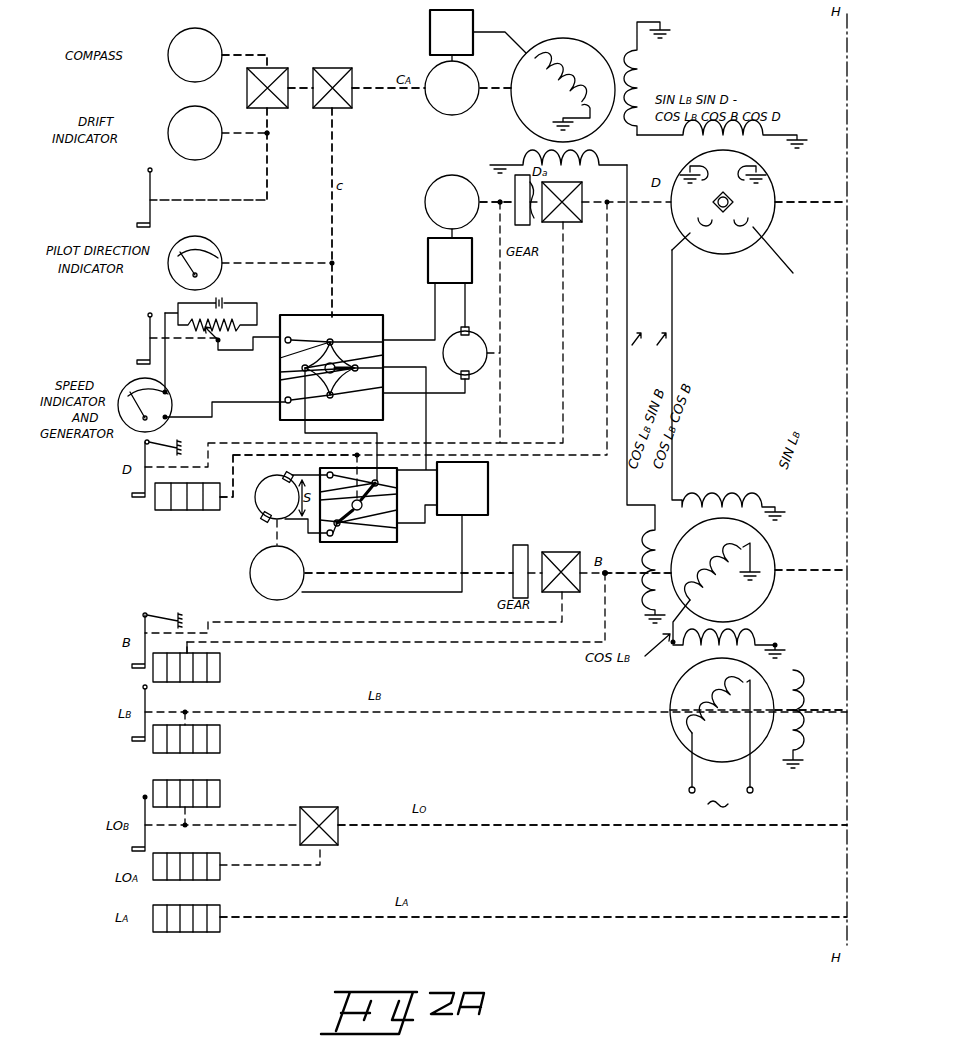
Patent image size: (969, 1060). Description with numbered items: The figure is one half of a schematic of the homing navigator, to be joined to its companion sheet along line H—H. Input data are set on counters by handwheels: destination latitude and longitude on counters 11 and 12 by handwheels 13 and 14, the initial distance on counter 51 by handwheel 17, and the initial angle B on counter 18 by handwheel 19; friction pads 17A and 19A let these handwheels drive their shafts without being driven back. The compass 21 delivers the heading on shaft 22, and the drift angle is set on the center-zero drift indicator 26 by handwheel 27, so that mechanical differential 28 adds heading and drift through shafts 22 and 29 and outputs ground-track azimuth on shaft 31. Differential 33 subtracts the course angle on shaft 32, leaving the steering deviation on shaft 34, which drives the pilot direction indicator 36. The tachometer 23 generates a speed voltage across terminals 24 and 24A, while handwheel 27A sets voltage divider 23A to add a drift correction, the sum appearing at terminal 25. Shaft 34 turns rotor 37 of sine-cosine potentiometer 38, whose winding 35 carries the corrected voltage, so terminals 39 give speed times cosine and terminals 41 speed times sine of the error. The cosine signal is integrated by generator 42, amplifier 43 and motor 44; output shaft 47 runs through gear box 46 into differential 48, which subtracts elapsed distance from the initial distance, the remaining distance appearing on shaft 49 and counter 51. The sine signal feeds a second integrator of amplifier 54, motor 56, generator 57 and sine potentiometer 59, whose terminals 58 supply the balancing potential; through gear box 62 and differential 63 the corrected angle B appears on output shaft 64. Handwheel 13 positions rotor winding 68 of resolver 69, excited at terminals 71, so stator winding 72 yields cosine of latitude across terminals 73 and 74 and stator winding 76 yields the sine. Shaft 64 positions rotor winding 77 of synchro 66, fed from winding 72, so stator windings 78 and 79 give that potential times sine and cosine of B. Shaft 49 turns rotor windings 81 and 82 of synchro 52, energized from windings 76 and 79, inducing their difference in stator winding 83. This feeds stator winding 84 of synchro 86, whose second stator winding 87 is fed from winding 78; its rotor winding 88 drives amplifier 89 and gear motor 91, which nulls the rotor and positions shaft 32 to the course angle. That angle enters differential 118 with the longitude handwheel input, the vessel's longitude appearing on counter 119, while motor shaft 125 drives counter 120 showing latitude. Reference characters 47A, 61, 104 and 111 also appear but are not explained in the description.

The compass 21 is at (176, 42).
The shaft 22 is at (262, 56).
The center-zero drift indicator 26 is at (184, 110).
The mechanical differential 28 is at (247, 90).
The shaft 29 is at (277, 154).
The handwheel 27 is at (150, 192).
The shaft 31 is at (298, 85).
The differential 33 is at (345, 64).
The shaft 32 is at (380, 88).
The shaft 34 is at (332, 141).
The pilot direction indicator 36 is at (212, 252).
The voltage divider 23A is at (245, 302).
The handwheel 27A is at (150, 325).
The terminal 25 is at (327, 389).
The winding 35 is at (290, 337).
The rotor terminals 39 is at (338, 402).
The rotor 37 is at (346, 375).
The sine-cosine potentiometer 38 is at (380, 316).
The terminals 41 is at (383, 355).
The direct-current generator 42 is at (443, 353).
The high gain amplifier 43 is at (428, 254).
The motor 44 is at (432, 187).
The output shaft 47 is at (500, 200).
The gear box 46 is at (516, 226).
The gear coupling 47A is at (536, 226).
The differential 48 is at (582, 194).
The propeller shaft tachometer 23 is at (142, 380).
The terminal 24A is at (168, 391).
The terminal 24 is at (170, 416).
The pad 17A is at (150, 450).
The handwheel 17 is at (132, 497).
The counter 51 is at (230, 492).
The generator 57 is at (264, 497).
The shaft 49 is at (829, 200).
The potentiometer output terminals 58 is at (397, 486).
The sine potentiometer 59 is at (410, 421).
The amplifier 54 is at (488, 484).
The motor 56 is at (262, 553).
The pad 19A is at (160, 614).
The handwheel 19 is at (132, 666).
The counter 18 is at (220, 668).
The handwheel 13 is at (132, 739).
The counter 11 is at (220, 736).
The counter 12 is at (220, 788).
The handwheel 14 is at (132, 851).
The differential 118 is at (336, 807).
The counter 119 is at (220, 866).
The counter 120 is at (220, 917).
The lead 111 is at (829, 825).
The motor shaft 125 is at (829, 917).
The lead 104 is at (838, 706).
The synchro or resolver 69 is at (714, 732).
The rotor winding 68 is at (722, 698).
The terminals 71 is at (747, 790).
The second stator winding 76 is at (804, 722).
The synchro 66 is at (721, 570).
The rotor winding 77 is at (716, 556).
The stator winding 78 is at (645, 534).
The stator winding 79 is at (727, 496).
The stator winding 72 is at (690, 640).
The terminal 73 is at (779, 640).
The terminal 74 is at (673, 646).
The output shaft 64 is at (828, 570).
The lead 61 is at (505, 572).
The gear box 62 is at (530, 540).
The differential 63 is at (573, 541).
The synchro 52 is at (732, 211).
The rotor winding 81 is at (740, 230).
The rotor winding 82 is at (708, 210).
The stator winding 83 is at (683, 145).
The stator winding 84 is at (642, 70).
The synchro 86 is at (544, 80).
The rotor winding 88 is at (575, 88).
The second stator winding 87 is at (526, 150).
The amplifier 89 is at (430, 28).
The gear motor 91 is at (480, 86).